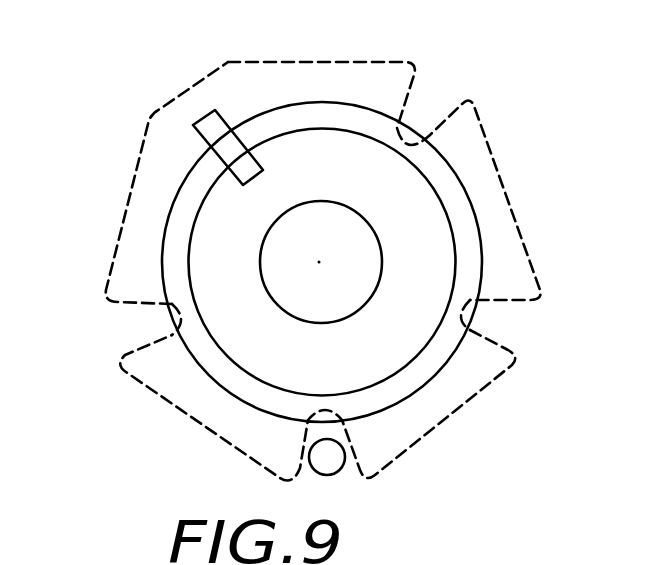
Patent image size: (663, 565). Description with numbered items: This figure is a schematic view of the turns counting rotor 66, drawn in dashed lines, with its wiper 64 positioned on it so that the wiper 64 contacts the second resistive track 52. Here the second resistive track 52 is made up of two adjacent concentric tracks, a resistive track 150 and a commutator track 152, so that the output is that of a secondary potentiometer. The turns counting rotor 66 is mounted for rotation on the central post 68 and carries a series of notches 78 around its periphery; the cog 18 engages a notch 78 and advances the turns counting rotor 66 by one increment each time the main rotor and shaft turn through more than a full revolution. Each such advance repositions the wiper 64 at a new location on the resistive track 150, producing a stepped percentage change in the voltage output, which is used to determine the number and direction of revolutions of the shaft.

The cog 18 is at (335, 468).
The second resistive track 52 is at (330, 262).
The wiper 64 is at (215, 112).
The turns counting rotor 66 is at (355, 63).
The post 68 is at (352, 232).
The notch 78 is at (128, 324).
The resistive track 150 is at (453, 227).
The commutator track 152 is at (455, 172).